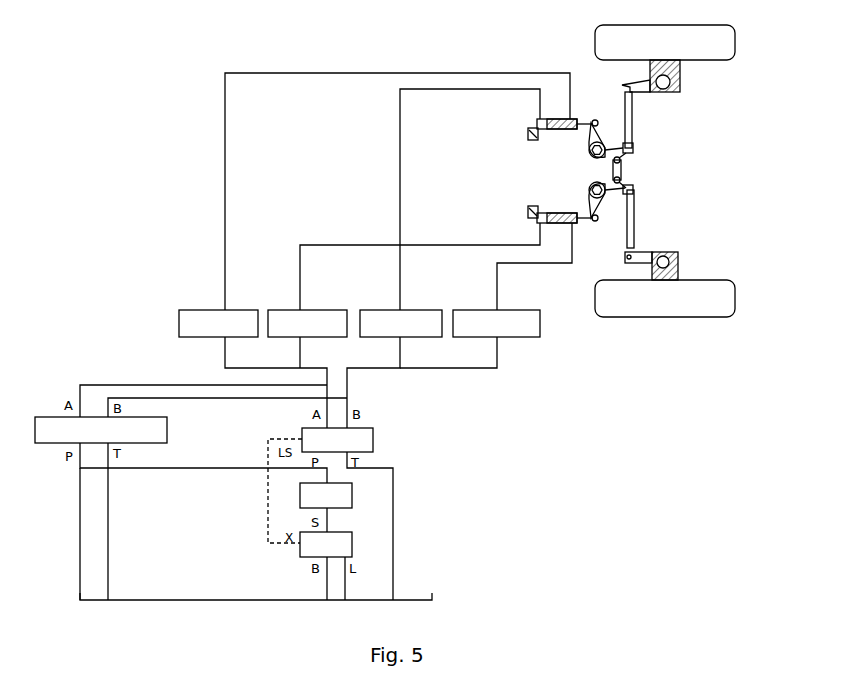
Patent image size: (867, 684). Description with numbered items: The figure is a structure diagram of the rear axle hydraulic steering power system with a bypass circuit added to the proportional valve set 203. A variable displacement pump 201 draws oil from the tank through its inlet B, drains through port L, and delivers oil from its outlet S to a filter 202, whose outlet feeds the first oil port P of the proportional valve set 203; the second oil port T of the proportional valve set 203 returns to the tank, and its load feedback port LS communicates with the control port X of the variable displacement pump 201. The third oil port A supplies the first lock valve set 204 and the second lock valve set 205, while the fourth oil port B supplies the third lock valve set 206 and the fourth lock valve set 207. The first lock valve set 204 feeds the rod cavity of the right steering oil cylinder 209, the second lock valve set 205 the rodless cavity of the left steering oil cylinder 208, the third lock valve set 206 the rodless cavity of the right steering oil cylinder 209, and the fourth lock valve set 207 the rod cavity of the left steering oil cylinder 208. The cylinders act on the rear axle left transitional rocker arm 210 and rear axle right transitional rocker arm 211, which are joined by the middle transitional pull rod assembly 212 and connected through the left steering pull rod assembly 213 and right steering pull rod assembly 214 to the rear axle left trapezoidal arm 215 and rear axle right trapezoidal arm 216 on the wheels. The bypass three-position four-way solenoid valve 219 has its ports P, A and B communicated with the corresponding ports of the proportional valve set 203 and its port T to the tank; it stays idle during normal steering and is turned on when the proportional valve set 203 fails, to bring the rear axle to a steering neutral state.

The variable displacement pump 201 is at (300, 556).
The filter 202 is at (300, 507).
The proportional valve set 203 is at (300, 432).
The first lock valve set 204 is at (207, 312).
The second lock valve set 205 is at (290, 312).
The third lock valve set 206 is at (382, 312).
The fourth lock valve set 207 is at (470, 313).
The left steering oil cylinder 208 is at (541, 211).
The right steering oil cylinder 209 is at (541, 131).
The rear axle left transitional rocker arm 210 is at (591, 190).
The rear axle right transitional rocker arm 211 is at (591, 148).
The middle transitional pull rod assembly 212 is at (621, 170).
The left steering pull rod assembly 213 is at (634, 217).
The right steering pull rod assembly 214 is at (633, 125).
The rear axle left trapezoidal arm 215 is at (677, 262).
The rear axle right trapezoidal arm 216 is at (680, 82).
The three-position four-way solenoid valve 219 is at (60, 422).